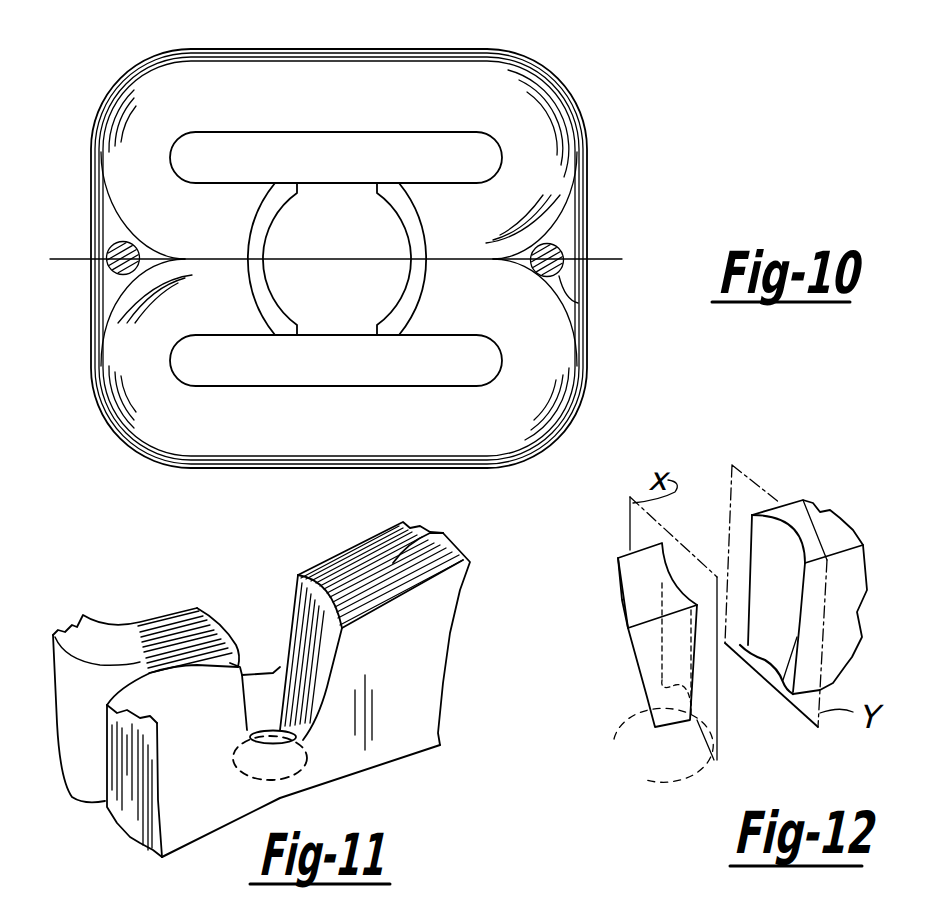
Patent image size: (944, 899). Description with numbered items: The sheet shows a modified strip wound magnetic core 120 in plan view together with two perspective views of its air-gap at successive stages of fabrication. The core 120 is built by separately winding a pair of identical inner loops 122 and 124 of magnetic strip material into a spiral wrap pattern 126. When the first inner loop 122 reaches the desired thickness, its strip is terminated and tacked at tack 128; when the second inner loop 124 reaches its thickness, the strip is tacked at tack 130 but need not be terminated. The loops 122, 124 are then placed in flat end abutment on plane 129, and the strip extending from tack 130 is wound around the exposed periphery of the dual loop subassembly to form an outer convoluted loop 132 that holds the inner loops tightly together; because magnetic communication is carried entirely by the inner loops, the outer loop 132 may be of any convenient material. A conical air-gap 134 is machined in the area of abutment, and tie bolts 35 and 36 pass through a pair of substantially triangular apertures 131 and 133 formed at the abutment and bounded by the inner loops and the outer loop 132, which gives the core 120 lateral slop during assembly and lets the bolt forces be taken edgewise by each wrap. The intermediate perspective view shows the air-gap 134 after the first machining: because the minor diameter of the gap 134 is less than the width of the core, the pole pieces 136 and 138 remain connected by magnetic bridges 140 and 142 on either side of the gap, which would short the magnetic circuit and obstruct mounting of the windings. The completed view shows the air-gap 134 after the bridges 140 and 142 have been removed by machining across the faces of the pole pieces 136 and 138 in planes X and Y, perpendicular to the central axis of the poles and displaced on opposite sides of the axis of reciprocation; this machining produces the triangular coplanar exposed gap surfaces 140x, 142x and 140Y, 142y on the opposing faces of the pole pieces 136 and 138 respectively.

In FIG. 10, the strip wound magnetic core 120 is at (100, 98).
In FIG. 10, the first inner loop 122 is at (224, 433).
In FIG. 10, the second inner loop 124 is at (250, 79).
In FIG. 10, the spiral wrap pattern 126 is at (137, 428).
In FIG. 10, the tack 128 is at (358, 434).
In FIG. 10, the plane of abutment 129 is at (604, 260).
In FIG. 10, the tack 130 is at (437, 62).
In FIG. 10, the triangular aperture 131 is at (108, 300).
In FIG. 10, the outer convoluted loop 132 is at (585, 238).
In FIG. 10, the triangular aperture 133 is at (578, 303).
In FIG. 10, the conical air-gap 134 is at (352, 243).
In FIG. 11, the conical air-gap 134 is at (312, 657).
In FIG. 12, the conical air-gap 134 is at (708, 538).
In FIG. 10, the tie bolt 35 is at (110, 244).
In FIG. 10, the tie bolt 36 is at (562, 232).
In FIG. 11, the pole piece 136 is at (170, 653).
In FIG. 12, the pole piece 136 is at (633, 587).
In FIG. 11, the pole piece 138 is at (434, 517).
In FIG. 12, the pole piece 138 is at (812, 513).
In FIG. 11, the magnetic bridge 140 is at (308, 773).
In FIG. 11, the magnetic bridge 142 is at (257, 673).
In FIG. 12, the exposed gap surface 140x is at (674, 773).
In FIG. 12, the exposed gap surface 140Y is at (797, 640).
In FIG. 12, the exposed gap surface 142x is at (640, 680).
In FIG. 12, the exposed gap surface 142y is at (745, 640).